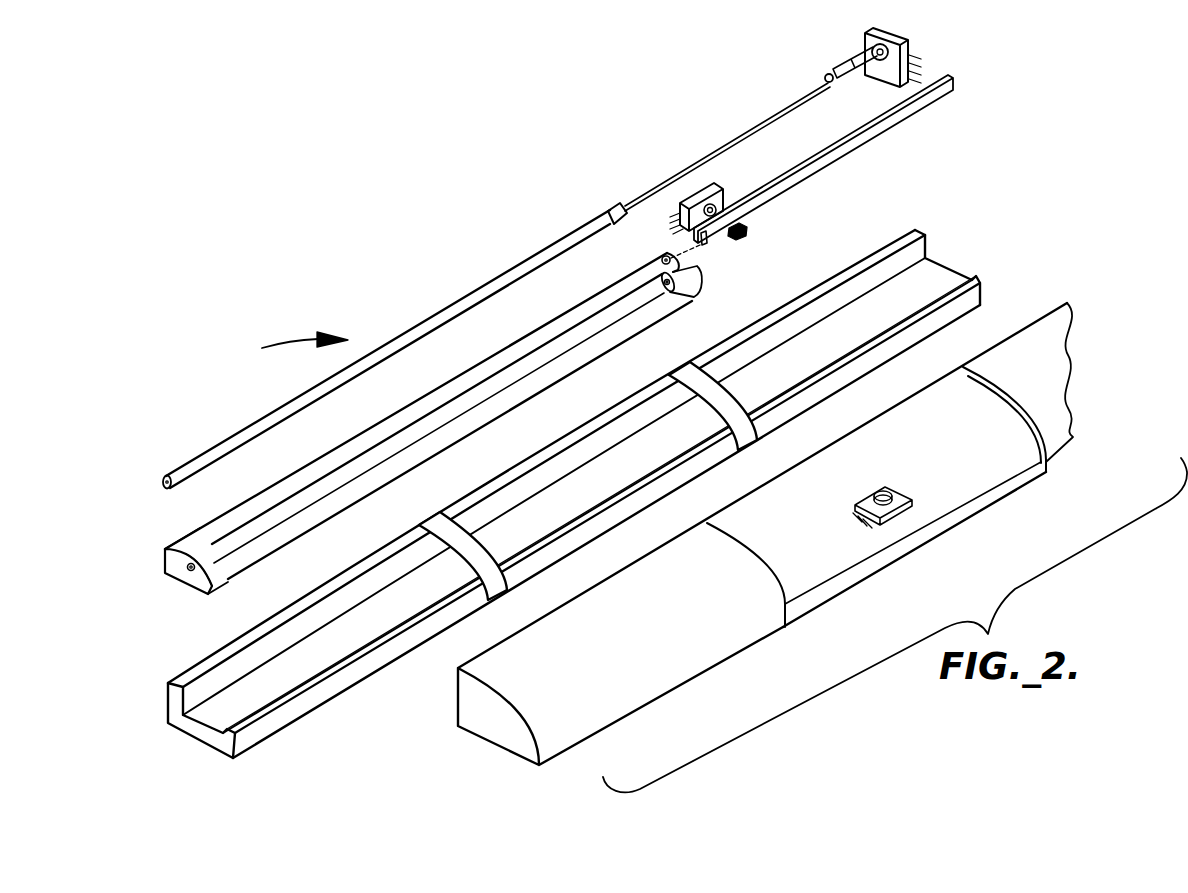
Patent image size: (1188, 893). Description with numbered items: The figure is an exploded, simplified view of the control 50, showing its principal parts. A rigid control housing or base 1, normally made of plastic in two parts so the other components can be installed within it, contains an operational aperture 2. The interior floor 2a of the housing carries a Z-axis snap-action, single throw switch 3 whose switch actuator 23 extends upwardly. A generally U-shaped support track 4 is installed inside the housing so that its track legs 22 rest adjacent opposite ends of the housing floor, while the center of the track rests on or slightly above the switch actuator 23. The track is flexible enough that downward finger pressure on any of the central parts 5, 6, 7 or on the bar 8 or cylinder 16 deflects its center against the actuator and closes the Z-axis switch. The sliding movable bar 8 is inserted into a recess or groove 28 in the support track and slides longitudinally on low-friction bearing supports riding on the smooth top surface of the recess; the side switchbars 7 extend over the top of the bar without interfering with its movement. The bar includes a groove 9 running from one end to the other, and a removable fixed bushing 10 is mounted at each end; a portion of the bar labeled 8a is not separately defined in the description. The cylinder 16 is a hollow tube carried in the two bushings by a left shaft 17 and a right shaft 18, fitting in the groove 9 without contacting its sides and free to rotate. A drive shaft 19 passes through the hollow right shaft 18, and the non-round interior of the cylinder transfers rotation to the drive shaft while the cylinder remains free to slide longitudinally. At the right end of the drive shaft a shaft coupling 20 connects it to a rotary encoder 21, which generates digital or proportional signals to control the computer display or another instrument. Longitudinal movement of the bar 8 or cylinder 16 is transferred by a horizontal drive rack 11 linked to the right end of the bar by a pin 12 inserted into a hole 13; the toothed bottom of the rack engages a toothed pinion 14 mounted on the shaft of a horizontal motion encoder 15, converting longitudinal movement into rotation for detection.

The control housing 1 is at (675, 671).
The operational aperture 2 is at (956, 507).
The interior floor 2a is at (827, 575).
The Z-axis snap-action single throw switch 3 is at (903, 490).
The support track 4 is at (947, 267).
The central part 5 is at (663, 492).
The central part 6 is at (570, 437).
The side switchbar 7 is at (425, 520).
The sliding movable bar 8 is at (163, 566).
The end cap flange 8a is at (200, 590).
The groove 9 is at (300, 502).
The removable fixed bushing 10 is at (190, 572).
The horizontal drive rack 11 is at (846, 158).
The pin 12 is at (705, 243).
The hole 13 is at (667, 256).
The toothed pinion 14 is at (745, 233).
The horizontal motion encoder 15 is at (724, 198).
The cylinder 16 is at (411, 341).
The left shaft 17 is at (162, 483).
The right shaft 18 is at (615, 207).
The drive shaft 19 is at (728, 142).
The shaft coupling 20 is at (831, 75).
The rotary encoder 21 is at (866, 32).
The track legs 22 is at (250, 755).
The switch actuator 23 is at (857, 498).
The recess 28 is at (212, 724).
The control 50 is at (283, 346).